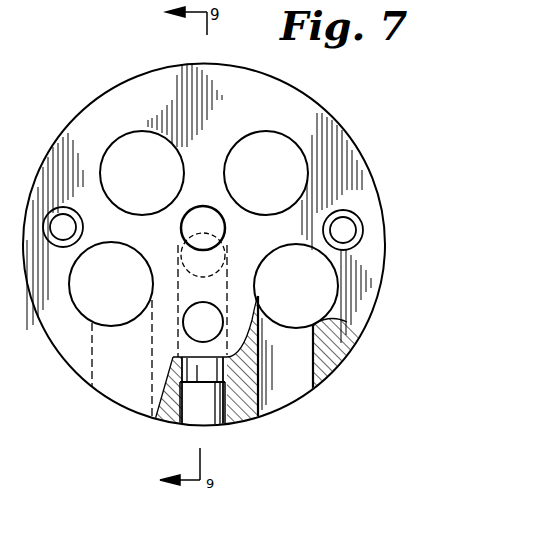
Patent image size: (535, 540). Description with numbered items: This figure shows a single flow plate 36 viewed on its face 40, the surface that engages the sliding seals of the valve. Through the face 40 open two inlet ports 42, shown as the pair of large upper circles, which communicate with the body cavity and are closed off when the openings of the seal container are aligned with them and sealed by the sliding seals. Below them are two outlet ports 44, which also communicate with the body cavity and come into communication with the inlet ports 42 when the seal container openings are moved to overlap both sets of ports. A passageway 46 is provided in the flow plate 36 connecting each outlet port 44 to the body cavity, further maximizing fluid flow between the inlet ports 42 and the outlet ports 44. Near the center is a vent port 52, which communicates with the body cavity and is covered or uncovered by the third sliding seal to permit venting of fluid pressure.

The flow plate 36 is at (342, 128).
The face 40 is at (273, 90).
The inlet ports 42 is at (133, 157).
The outlet ports 44 is at (85, 293).
The passageway 46 is at (117, 403).
The vent port 52 is at (193, 331).